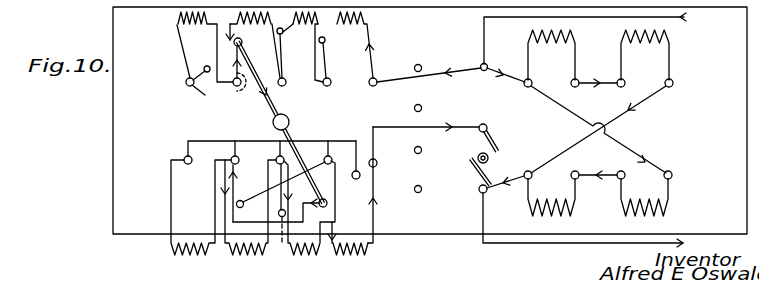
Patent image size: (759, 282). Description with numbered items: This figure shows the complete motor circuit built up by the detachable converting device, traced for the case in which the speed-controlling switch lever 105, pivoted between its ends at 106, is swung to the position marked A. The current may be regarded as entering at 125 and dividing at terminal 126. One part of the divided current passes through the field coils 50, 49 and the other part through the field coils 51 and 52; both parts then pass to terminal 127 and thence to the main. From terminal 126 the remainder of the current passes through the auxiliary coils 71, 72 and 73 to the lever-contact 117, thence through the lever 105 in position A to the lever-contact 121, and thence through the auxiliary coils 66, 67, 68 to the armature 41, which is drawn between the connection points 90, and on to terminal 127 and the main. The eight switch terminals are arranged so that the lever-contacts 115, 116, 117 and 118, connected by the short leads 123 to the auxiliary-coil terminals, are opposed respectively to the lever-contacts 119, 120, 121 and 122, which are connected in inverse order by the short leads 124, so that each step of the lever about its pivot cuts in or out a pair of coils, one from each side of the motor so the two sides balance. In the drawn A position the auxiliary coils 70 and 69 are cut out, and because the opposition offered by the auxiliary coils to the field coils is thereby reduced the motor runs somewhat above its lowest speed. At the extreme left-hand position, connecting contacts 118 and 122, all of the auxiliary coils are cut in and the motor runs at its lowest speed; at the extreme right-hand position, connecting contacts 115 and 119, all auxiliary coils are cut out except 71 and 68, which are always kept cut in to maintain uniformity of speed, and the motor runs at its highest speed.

The current entry point 125 is at (653, 17).
The auxiliary coil 70 is at (178, 23).
The lever-contact 118 is at (198, 72).
The lead 123 is at (244, 88).
The auxiliary coil 73 is at (253, 45).
The speed-controlling switch lever 105 is at (281, 122).
The lever-contact 117 is at (259, 70).
The pivot 106 is at (293, 118).
The lever position A is at (282, 97).
The lever-contact 116 is at (280, 46).
The auxiliary coil 72 is at (303, 47).
The lever-contact 115 is at (325, 41).
The auxiliary coil 71 is at (366, 20).
The terminal 126 is at (485, 64).
The field coil 50 is at (570, 55).
The field coil 49 is at (680, 32).
The field coil 52 is at (575, 207).
The field coil 51 is at (668, 205).
The contact 90 is at (487, 126).
The armature 41 is at (489, 158).
The terminal 127 is at (485, 193).
The lever-contact 122 is at (360, 152).
The lead 124 is at (223, 141).
The auxiliary coil 69 is at (201, 220).
The auxiliary coil 66 is at (248, 220).
The lever-contact 119 is at (277, 192).
The lever-contact 121 is at (327, 205).
The lever-contact 120 is at (285, 217).
The auxiliary coil 67 is at (300, 255).
The auxiliary coil 68 is at (362, 255).